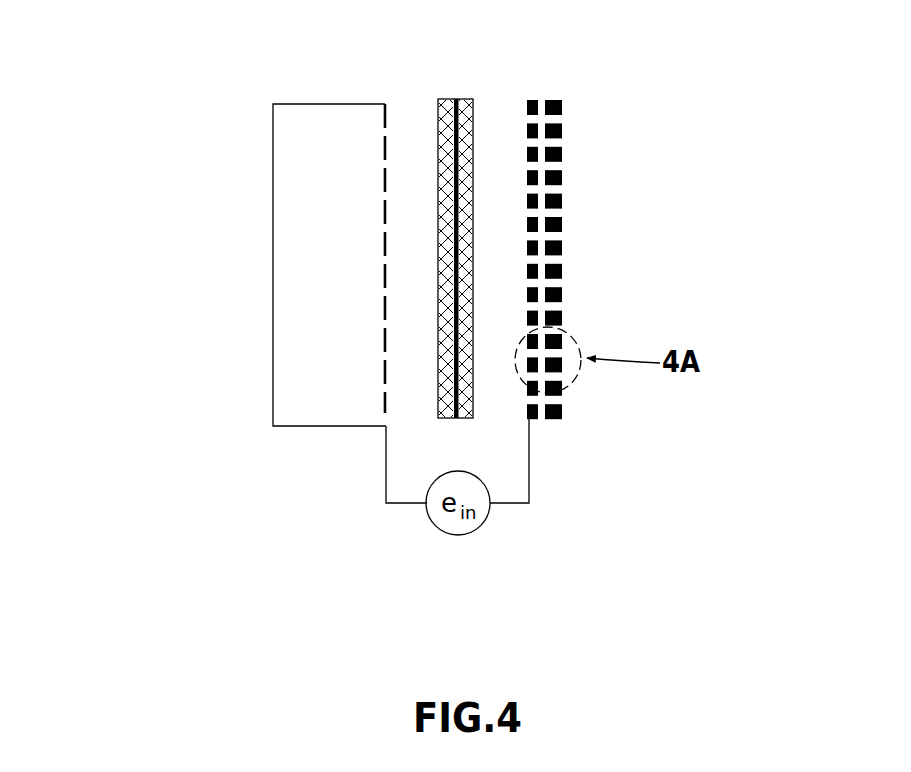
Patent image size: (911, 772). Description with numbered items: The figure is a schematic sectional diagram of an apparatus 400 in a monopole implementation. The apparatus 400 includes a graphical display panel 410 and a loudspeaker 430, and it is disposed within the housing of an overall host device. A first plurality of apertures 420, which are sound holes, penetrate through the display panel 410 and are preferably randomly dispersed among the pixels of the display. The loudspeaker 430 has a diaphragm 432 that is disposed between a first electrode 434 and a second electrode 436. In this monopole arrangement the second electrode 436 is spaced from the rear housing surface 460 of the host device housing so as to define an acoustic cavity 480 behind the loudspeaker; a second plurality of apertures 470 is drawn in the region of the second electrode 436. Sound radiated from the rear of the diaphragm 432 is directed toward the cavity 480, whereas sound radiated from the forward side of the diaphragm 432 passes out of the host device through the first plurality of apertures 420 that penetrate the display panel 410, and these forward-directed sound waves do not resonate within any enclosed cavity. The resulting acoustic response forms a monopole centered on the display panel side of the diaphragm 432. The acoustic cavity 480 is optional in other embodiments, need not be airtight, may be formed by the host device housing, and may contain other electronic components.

The apparatus 400 is at (329, 653).
The graphical display panel 410 is at (522, 445).
The first plurality of apertures 420 is at (567, 236).
The loudspeaker 430 is at (387, 545).
The diaphragm 432 is at (480, 80).
The first electrode 434 is at (520, 101).
The second electrode 436 is at (384, 453).
The rear housing surface 460 is at (273, 285).
The second plurality of apertures 470 is at (383, 152).
The acoustic cavity 480 is at (329, 265).